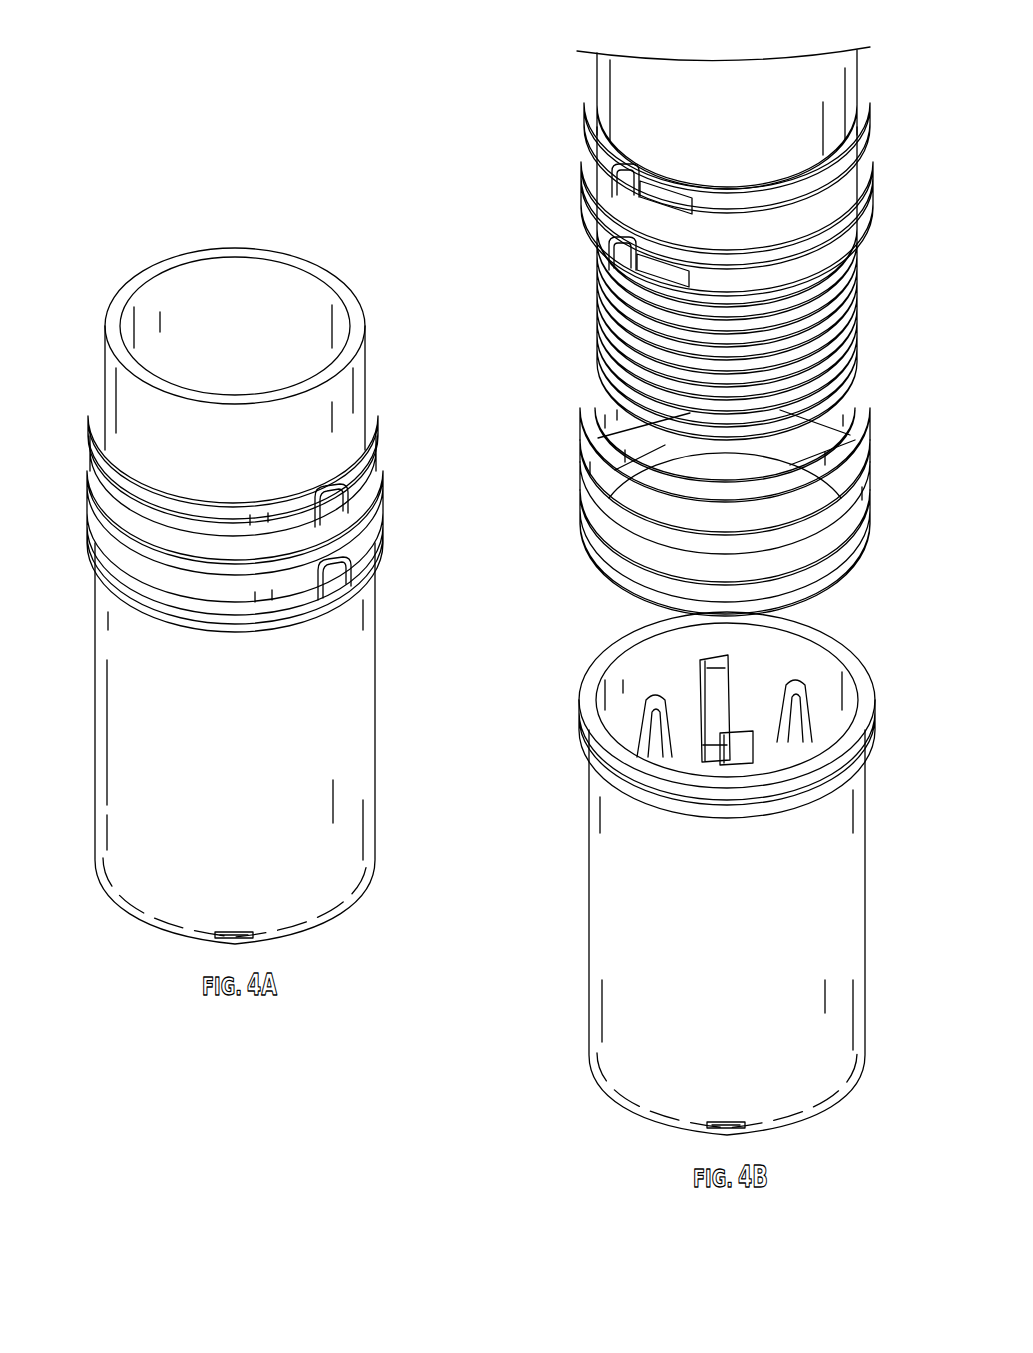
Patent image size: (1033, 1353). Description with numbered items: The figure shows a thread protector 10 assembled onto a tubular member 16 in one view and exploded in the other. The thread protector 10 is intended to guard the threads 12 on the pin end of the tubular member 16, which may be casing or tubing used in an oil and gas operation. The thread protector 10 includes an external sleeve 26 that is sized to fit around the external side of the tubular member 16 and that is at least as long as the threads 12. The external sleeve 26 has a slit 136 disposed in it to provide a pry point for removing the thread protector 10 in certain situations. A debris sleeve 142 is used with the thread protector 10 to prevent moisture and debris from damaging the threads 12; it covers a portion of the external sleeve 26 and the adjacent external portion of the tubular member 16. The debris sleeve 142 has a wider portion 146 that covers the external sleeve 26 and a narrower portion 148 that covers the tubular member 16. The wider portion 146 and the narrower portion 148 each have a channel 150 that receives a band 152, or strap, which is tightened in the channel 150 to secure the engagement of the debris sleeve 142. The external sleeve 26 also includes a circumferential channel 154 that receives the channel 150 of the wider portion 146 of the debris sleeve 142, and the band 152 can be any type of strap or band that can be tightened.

In FIG. 4A, the thread protector 10 is at (115, 208).
In FIG. 4B, the thread protector 10 is at (497, 136).
In FIG. 4B, the threads 12 is at (845, 328).
In FIG. 4A, the tubular member 16 is at (105, 367).
In FIG. 4B, the tubular member 16 is at (833, 81).
In FIG. 4A, the external sleeve 26 is at (355, 735).
In FIG. 4B, the external sleeve 26 is at (860, 858).
In FIG. 4A, the slit 136 is at (233, 930).
In FIG. 4B, the slit 136 is at (745, 1122).
In FIG. 4A, the debris sleeve 142 is at (372, 518).
In FIG. 4B, the debris sleeve 142 is at (862, 504).
In FIG. 4B, the wider portion 146 is at (872, 514).
In FIG. 4B, the narrower portion 148 is at (866, 458).
In FIG. 4B, the channel 150 is at (828, 578).
In FIG. 4A, the band 152 is at (118, 480).
In FIG. 4B, the band 152 is at (855, 158).
In FIG. 4B, the circumferential channel 154 is at (862, 770).